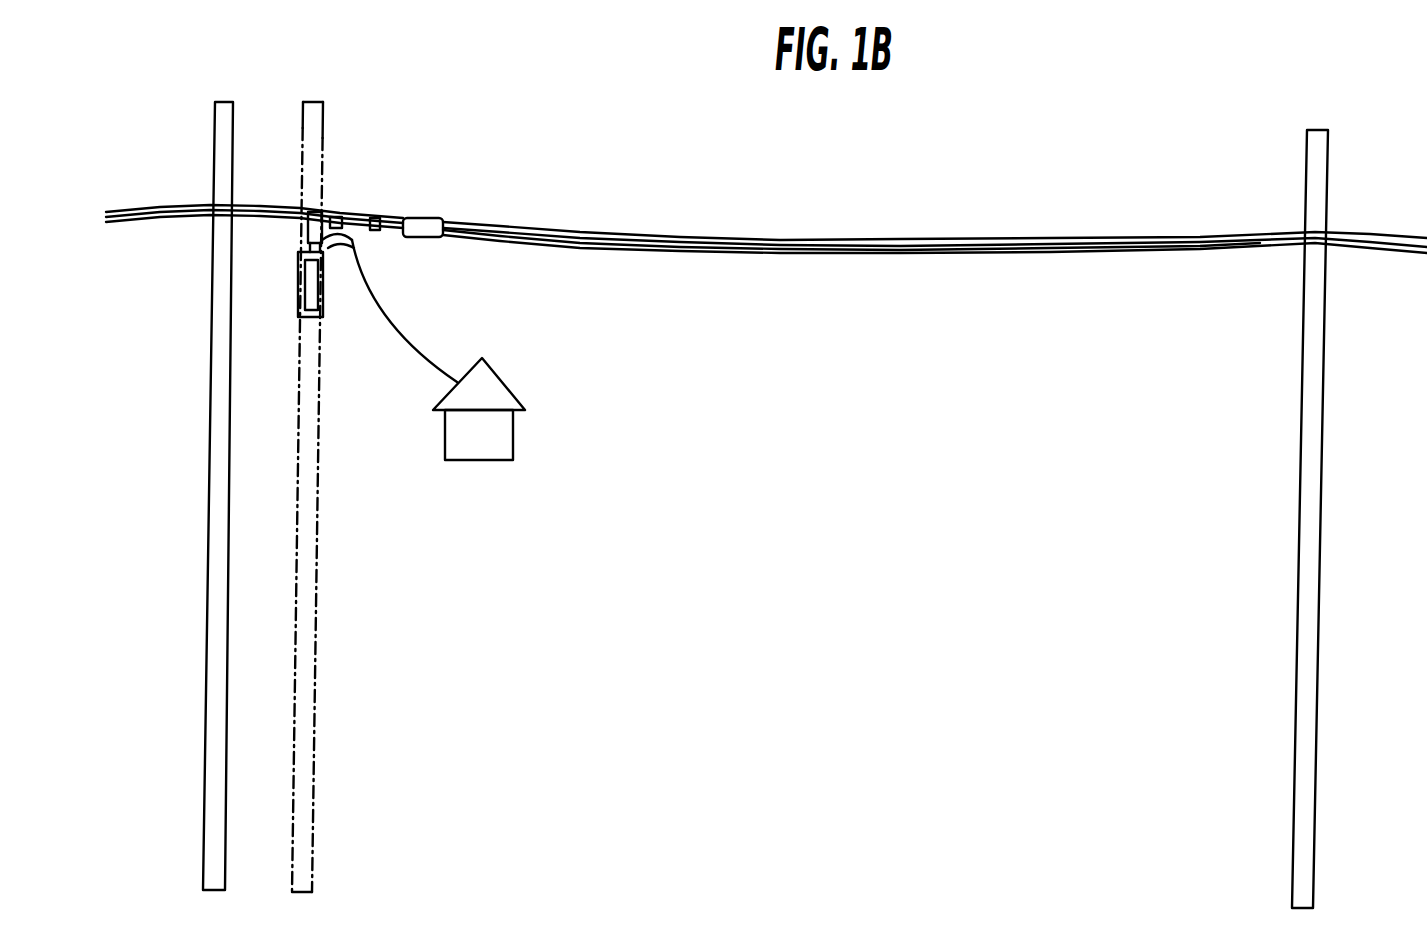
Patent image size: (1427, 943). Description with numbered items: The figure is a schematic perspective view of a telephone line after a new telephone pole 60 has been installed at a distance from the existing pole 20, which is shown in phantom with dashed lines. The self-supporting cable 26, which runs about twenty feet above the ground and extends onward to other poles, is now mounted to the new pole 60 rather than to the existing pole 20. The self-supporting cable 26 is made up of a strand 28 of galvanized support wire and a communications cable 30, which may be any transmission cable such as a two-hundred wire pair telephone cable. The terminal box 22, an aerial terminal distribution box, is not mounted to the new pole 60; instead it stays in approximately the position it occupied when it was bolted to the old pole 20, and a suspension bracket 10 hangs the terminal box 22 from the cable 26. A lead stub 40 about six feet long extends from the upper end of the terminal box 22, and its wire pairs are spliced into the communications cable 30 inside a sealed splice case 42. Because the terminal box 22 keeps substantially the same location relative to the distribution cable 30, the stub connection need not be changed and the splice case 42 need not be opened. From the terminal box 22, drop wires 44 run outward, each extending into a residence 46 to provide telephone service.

The suspension bracket 10 is at (302, 233).
The existing pole 20 is at (323, 136).
The terminal box 22 is at (323, 293).
The self-supporting cable 26 is at (727, 240).
The strand 28 is at (572, 230).
The communications cable 30 is at (603, 247).
The stub 40 is at (390, 238).
The splice case 42 is at (432, 218).
The drop wires 44 is at (426, 345).
The residence 46 is at (498, 435).
The new telephone pole 60 is at (213, 163).